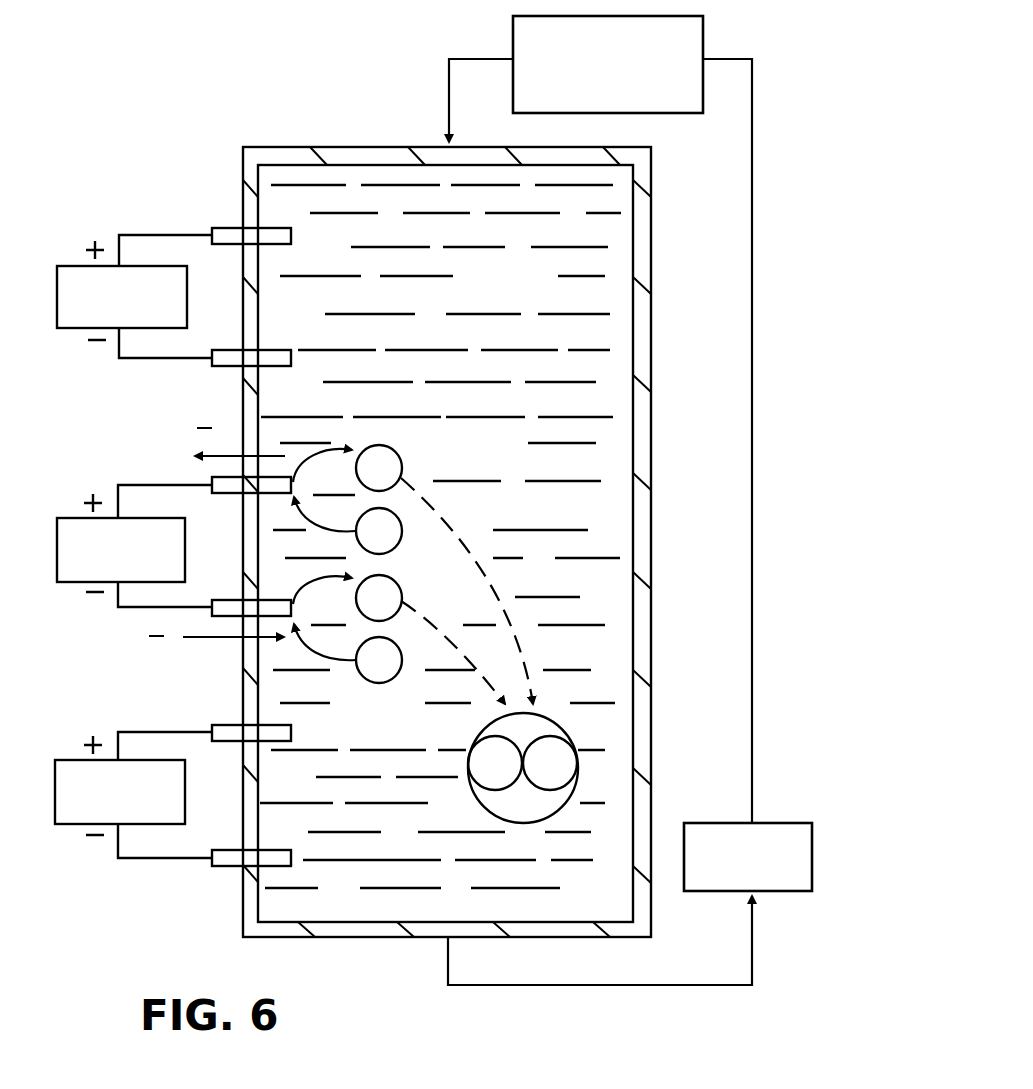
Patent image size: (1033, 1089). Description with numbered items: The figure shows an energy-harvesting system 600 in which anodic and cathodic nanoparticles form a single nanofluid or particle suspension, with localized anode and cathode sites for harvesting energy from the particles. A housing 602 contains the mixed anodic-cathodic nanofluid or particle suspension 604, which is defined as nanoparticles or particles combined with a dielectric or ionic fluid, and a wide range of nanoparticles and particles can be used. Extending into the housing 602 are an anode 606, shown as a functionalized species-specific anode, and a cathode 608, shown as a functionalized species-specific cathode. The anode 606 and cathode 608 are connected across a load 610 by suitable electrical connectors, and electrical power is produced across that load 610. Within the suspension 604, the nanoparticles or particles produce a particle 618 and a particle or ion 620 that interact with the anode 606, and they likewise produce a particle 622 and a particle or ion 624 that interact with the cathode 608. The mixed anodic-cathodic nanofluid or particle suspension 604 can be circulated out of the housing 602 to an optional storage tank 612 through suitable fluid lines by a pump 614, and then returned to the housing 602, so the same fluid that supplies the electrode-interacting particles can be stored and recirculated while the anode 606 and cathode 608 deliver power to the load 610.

The anodic and cathodic nanoparticles forming a single nanofluid or particle suspens 600 is at (278, 52).
The housing 602 is at (400, 105).
The mixed anodic-cathodic nanofluid or particle suspension 604 is at (543, 300).
The anode 606 is at (225, 228).
The cathode 608 is at (222, 367).
The load 610 is at (75, 330).
The optional storage tank 612 is at (513, 40).
The pump 614 is at (774, 823).
The particle 618 is at (402, 460).
The particle or ion 620 is at (401, 532).
The particle 622 is at (424, 581).
The particle or ion 624 is at (405, 710).